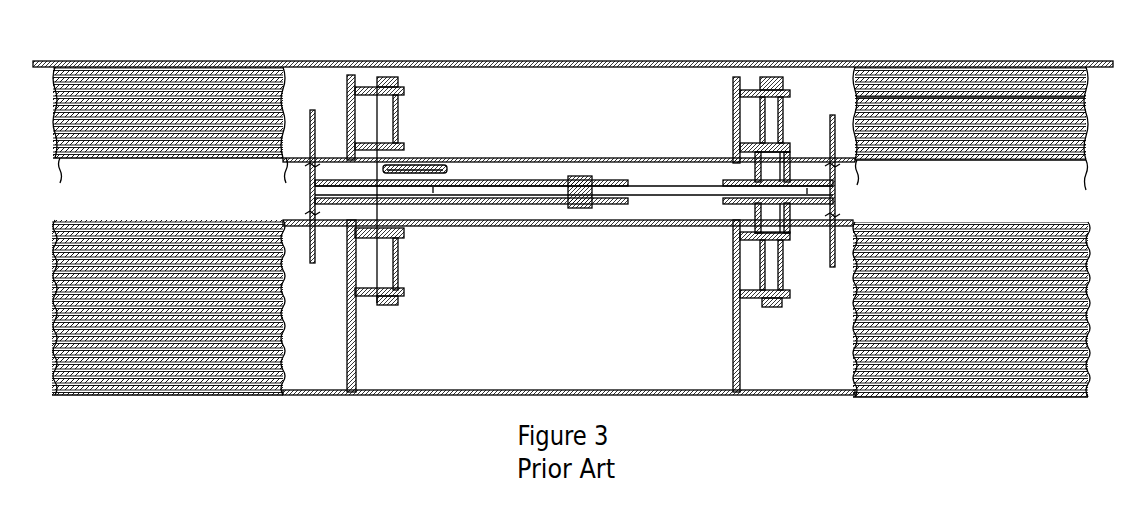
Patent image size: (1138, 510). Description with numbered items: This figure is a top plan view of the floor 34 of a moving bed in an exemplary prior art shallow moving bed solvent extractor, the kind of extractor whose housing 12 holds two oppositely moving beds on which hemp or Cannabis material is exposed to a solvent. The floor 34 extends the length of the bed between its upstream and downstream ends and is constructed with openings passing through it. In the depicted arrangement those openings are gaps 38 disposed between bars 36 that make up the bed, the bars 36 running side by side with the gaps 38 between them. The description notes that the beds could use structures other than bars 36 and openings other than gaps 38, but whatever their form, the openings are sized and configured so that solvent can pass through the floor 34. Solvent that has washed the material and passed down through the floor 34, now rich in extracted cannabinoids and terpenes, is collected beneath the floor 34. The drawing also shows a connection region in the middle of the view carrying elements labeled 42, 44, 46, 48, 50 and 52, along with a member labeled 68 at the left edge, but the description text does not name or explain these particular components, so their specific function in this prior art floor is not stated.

The housing 12 is at (198, 61).
The floor 34 is at (138, 72).
The bars 36 is at (938, 97).
The gaps 38 is at (1015, 97).
The connection assembly 42 is at (442, 113).
The tie rod 44 is at (657, 180).
The plate 46 is at (348, 102).
The sleeve 48 is at (550, 192).
The bolt 50 is at (387, 268).
The bracket 52 is at (403, 217).
The frame member 68 is at (82, 176).